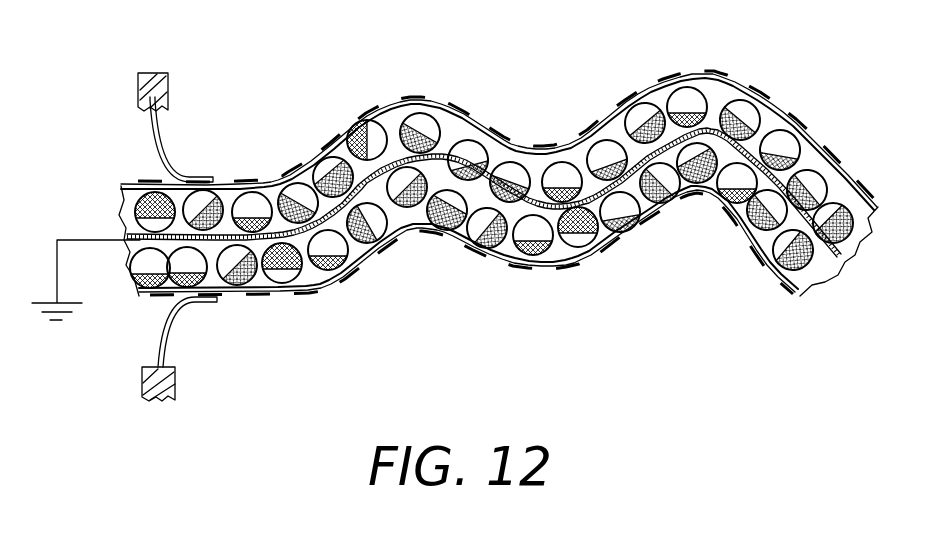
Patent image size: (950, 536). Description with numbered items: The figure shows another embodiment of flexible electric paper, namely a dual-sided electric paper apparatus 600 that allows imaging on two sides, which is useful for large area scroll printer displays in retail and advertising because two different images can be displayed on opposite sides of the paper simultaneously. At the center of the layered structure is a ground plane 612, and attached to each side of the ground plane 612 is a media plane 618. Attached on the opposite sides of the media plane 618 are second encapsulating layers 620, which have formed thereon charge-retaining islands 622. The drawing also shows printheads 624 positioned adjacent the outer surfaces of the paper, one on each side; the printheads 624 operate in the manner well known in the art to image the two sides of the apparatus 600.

The dual-sided electric paper apparatus 600 is at (509, 172).
The ground plane 612 is at (820, 254).
The media plane 618 is at (337, 147).
The second encapsulating layer 620 is at (383, 103).
The charge-retaining island 622 is at (440, 103).
The printhead 624 is at (150, 150).